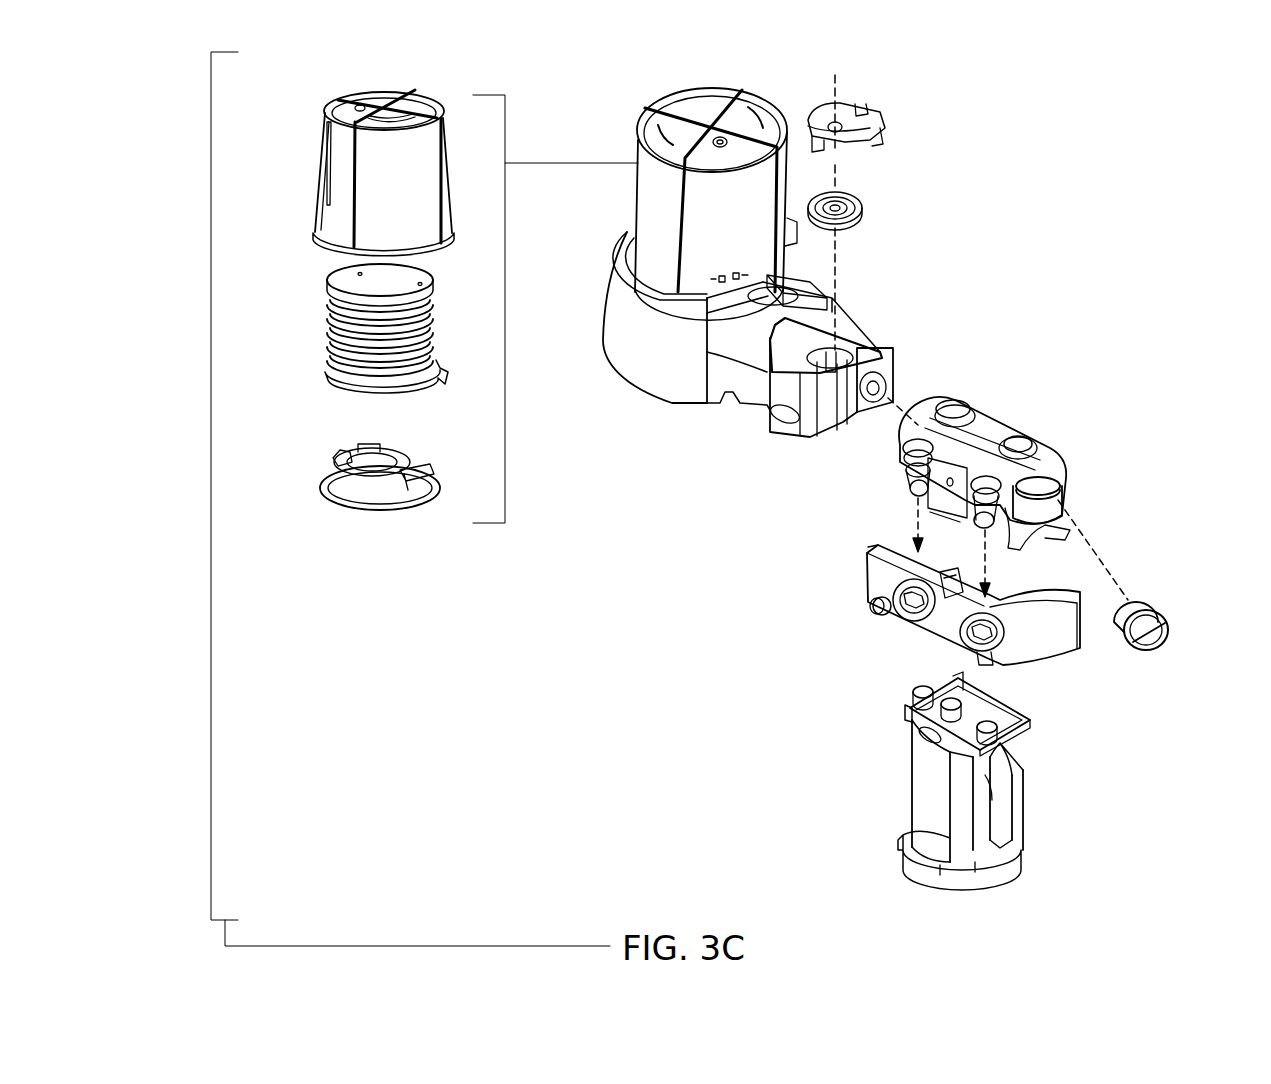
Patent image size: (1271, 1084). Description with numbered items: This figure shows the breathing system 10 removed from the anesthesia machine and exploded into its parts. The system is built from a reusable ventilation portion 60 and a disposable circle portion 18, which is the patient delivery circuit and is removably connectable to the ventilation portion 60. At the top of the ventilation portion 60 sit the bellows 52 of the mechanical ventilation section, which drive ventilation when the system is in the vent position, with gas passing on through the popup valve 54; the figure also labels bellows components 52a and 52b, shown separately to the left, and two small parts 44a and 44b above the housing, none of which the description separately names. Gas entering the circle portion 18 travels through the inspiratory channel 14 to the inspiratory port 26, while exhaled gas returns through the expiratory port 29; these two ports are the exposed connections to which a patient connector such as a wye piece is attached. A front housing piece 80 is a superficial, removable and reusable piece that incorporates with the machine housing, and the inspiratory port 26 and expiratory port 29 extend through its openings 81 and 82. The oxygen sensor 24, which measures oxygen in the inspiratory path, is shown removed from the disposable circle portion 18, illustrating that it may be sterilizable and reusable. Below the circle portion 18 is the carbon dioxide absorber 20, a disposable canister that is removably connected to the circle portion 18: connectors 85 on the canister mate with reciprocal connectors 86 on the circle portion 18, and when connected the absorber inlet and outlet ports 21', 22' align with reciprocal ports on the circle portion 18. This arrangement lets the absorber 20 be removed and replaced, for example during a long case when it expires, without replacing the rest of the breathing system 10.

The breathing system 10 is at (892, 92).
The bellows 52 is at (746, 102).
The bellows insert 52a is at (327, 290).
The cap cover 52b is at (326, 140).
The popup valve 54 is at (330, 456).
The washer 44a is at (866, 210).
The retainer tab 44b is at (888, 128).
The ventilation portion 60 is at (634, 376).
The circle portion 18 is at (959, 493).
The expiratory port 29 is at (906, 486).
The reciprocal connectors 86 is at (952, 508).
The inspiratory port 26 is at (1010, 530).
The inspiratory channel 14 is at (1093, 565).
The front housing piece 80 is at (943, 623).
The opening 81 is at (898, 615).
The opening 82 is at (992, 650).
The O2 sensor 24 is at (1164, 620).
The CO2 absorber 20 is at (971, 768).
The absorber inlet port 21' is at (955, 695).
The absorber outlet port 22' is at (996, 717).
The connectors on the canister 85 is at (908, 714).